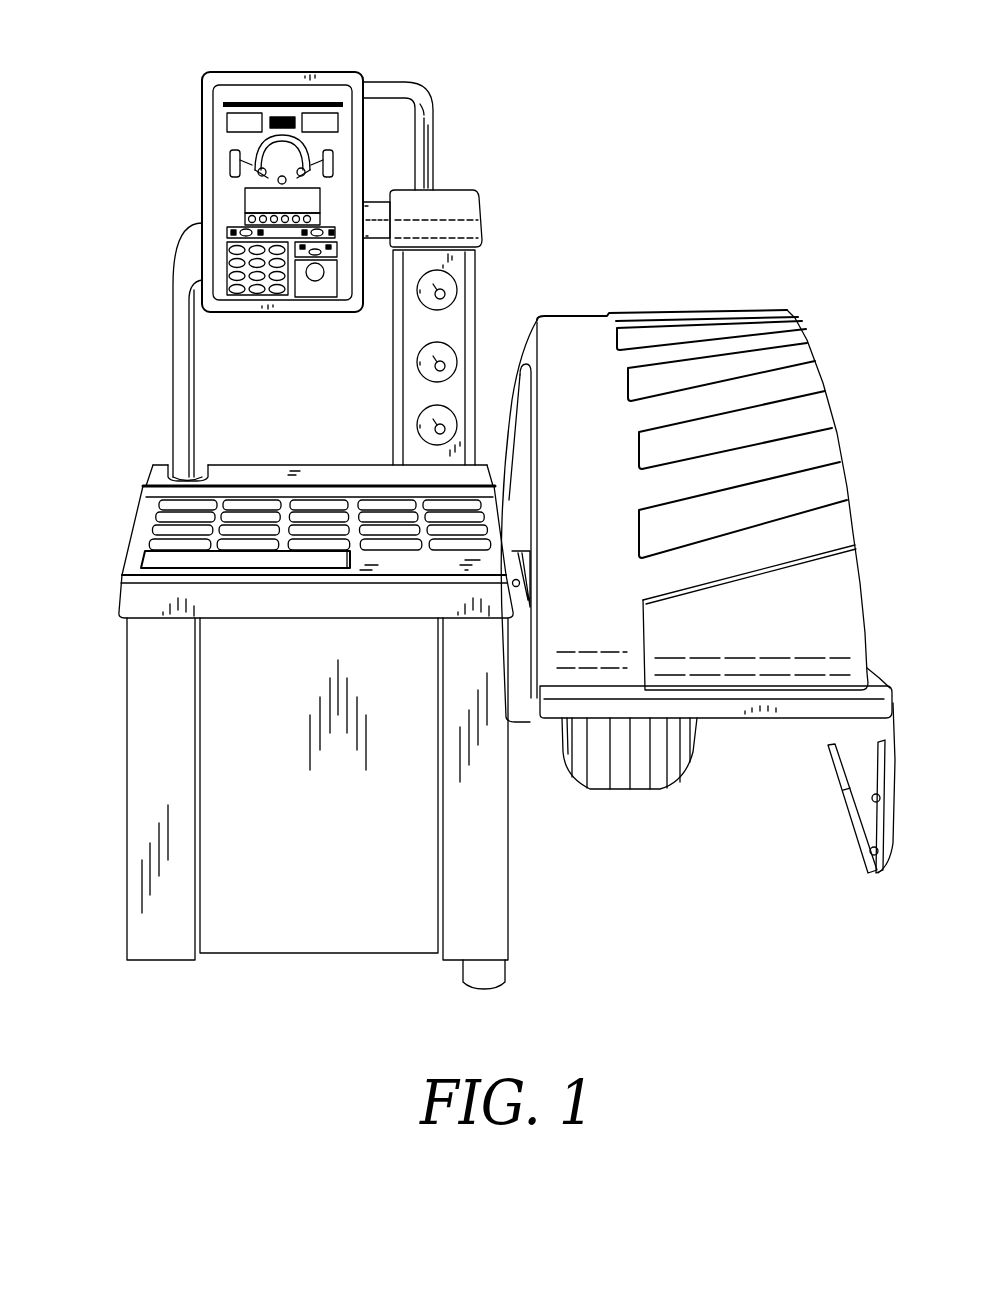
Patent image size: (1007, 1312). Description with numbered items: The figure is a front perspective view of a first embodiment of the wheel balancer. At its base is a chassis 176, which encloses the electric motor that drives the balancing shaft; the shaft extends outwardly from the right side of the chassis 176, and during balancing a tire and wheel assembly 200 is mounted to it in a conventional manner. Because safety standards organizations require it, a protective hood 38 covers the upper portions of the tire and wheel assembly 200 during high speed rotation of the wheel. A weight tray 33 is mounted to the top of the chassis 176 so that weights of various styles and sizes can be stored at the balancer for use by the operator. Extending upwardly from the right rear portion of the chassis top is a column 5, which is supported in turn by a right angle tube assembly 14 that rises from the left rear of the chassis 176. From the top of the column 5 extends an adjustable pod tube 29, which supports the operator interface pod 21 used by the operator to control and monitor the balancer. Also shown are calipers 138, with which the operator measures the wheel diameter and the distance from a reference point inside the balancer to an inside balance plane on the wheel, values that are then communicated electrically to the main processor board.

The column 5 is at (477, 277).
The right angle tube assembly 14 is at (173, 368).
The operator interface pod 21 is at (286, 72).
The adjustable pod tube 29 is at (423, 95).
The weight tray 33 is at (138, 540).
The protective hood 38 is at (663, 311).
The calipers 138 is at (847, 837).
The chassis 176 is at (127, 811).
The tire and wheel assembly 200 is at (603, 791).